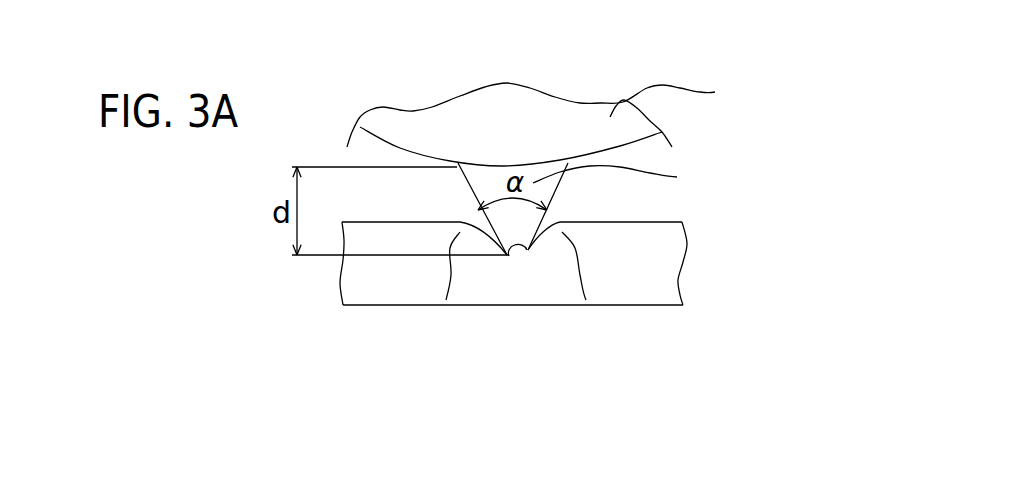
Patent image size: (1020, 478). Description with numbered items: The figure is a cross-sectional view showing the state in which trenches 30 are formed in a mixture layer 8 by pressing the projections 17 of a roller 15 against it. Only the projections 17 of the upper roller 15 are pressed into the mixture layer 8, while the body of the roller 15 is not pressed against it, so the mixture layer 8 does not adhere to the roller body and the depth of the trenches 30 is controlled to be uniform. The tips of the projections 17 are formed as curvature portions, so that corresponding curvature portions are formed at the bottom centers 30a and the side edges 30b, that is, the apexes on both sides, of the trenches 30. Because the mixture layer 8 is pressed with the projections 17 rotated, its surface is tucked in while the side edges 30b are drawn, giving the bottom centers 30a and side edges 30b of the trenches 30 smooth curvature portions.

The roller 15 is at (715, 92).
The projections 17 is at (677, 177).
The mixture layer 8 is at (665, 248).
The trenches 30 is at (398, 347).
The bottom centers 30a is at (525, 257).
The side edges 30b is at (446, 300).